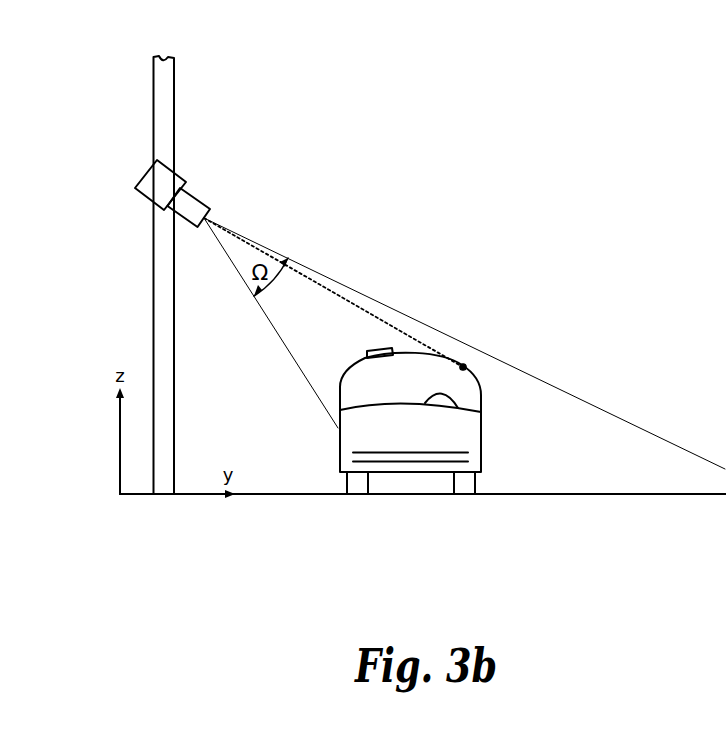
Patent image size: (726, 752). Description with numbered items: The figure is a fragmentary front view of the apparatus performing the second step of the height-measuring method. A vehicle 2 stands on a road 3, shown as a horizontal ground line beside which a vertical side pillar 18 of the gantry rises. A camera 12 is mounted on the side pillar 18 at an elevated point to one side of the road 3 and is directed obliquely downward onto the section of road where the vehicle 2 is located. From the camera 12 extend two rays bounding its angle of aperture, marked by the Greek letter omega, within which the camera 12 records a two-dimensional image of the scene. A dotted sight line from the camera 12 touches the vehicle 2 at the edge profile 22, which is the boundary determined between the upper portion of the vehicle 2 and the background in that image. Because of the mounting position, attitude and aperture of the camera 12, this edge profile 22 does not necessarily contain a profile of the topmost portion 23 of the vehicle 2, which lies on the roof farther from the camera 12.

The side pillar 18 is at (158, 77).
The camera 12 is at (158, 192).
The vehicle 2 is at (475, 432).
The topmost portion 23 is at (370, 352).
The edge profile 22 is at (465, 365).
The road 3 is at (578, 494).